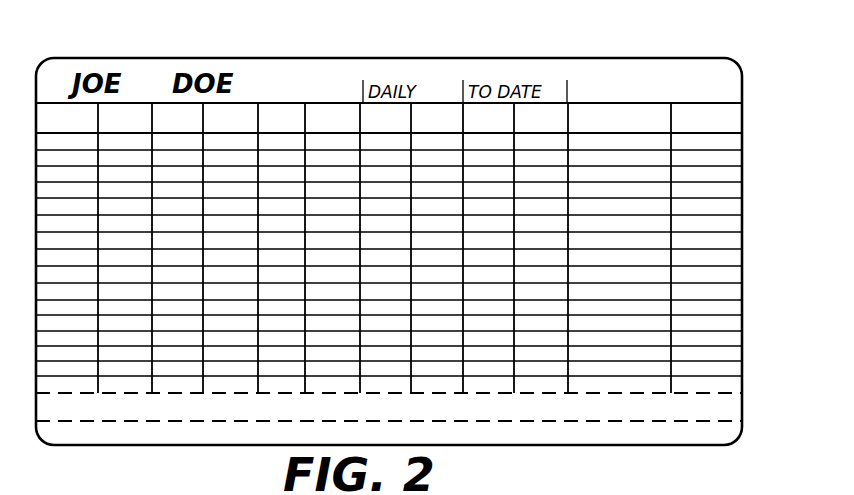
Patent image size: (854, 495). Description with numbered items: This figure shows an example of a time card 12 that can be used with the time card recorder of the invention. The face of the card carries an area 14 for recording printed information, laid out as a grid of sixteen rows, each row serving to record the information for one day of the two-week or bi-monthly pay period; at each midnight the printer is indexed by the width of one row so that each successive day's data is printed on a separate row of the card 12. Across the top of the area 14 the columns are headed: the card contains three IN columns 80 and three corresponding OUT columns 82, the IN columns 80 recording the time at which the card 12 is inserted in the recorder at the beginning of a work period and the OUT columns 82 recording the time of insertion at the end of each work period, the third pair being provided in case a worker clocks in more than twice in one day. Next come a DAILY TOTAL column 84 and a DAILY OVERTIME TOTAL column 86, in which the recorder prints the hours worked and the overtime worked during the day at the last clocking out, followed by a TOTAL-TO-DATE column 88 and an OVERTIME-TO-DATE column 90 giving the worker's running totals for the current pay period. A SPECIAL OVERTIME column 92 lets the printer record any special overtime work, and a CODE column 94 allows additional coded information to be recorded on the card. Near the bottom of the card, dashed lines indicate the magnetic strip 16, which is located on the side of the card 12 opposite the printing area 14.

The time-card 12 is at (744, 69).
The area for recording printed information 14 is at (748, 135).
The magnetic strip 16 is at (700, 413).
The IN columns 80 is at (55, 101).
The OUT columns 82 is at (149, 101).
The DAILY TOTAL column 84 is at (366, 100).
The DAILY OVERTIME TOTAL column 86 is at (443, 100).
The TOTAL-TO-DATE column 88 is at (488, 105).
The OVERTIME-TO-DATE column 90 is at (563, 90).
The SPECIAL OVERTIME column 92 is at (615, 105).
The CODE column 94 is at (702, 105).